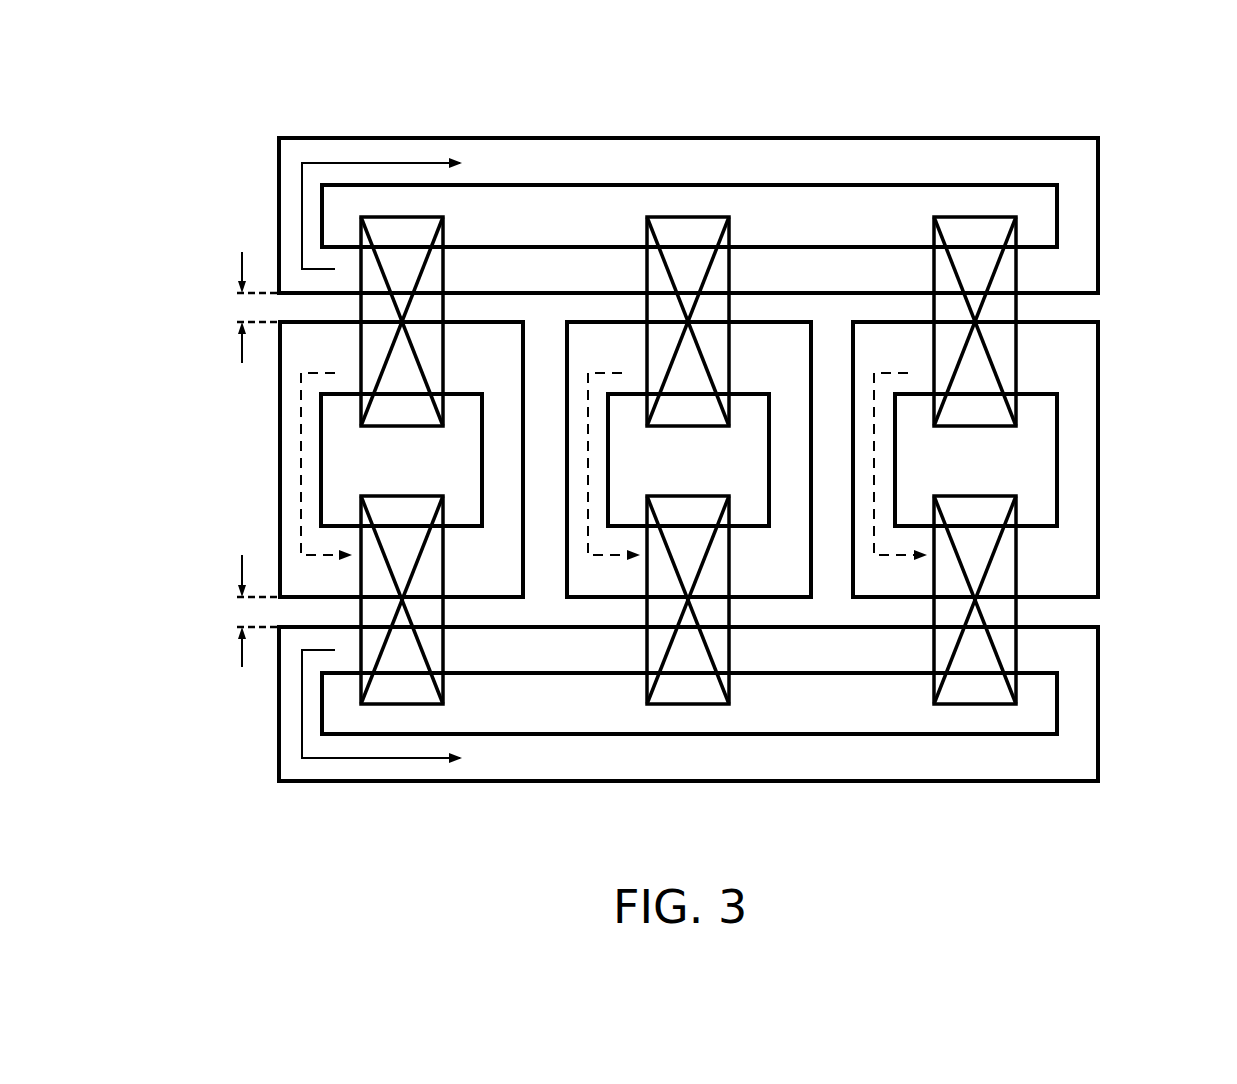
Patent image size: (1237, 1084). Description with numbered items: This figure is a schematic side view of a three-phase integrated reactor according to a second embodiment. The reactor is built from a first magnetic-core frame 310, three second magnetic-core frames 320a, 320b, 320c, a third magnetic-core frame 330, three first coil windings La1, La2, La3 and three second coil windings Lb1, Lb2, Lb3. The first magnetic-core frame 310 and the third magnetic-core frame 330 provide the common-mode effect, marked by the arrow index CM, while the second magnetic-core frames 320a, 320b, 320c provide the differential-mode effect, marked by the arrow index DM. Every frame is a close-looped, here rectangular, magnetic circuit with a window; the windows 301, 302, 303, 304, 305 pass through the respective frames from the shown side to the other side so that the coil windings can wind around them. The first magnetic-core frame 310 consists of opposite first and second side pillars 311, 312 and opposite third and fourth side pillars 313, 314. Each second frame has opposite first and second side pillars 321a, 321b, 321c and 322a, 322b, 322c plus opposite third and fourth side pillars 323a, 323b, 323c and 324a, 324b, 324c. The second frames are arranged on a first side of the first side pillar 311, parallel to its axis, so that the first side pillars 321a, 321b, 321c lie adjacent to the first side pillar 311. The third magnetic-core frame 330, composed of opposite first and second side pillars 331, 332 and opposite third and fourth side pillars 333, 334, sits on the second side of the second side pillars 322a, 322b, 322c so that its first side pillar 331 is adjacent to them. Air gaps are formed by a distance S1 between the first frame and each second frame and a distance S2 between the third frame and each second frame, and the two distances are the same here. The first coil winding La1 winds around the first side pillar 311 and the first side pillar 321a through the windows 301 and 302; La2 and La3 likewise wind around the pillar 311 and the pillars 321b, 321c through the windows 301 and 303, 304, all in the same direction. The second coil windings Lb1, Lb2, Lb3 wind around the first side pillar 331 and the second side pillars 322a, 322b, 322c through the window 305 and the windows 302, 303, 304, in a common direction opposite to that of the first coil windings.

The window 301 is at (975, 195).
The window 302 is at (375, 472).
The window 303 is at (662, 472).
The window 304 is at (949, 472).
The window 305 is at (975, 720).
The first magnetic-core frame 310 is at (703, 457).
The first side pillar 311 is at (600, 265).
The second side pillar 312 is at (687, 150).
The third side pillar 313 is at (286, 215).
The fourth side pillar 314 is at (1087, 213).
The second magnetic-core frame 320a is at (377, 537).
The second magnetic-core frame 320b is at (701, 537).
The second magnetic-core frame 320c is at (1030, 469).
The first side pillar 321a is at (463, 362).
The first side pillar 321b is at (750, 362).
The first side pillar 321c is at (1043, 350).
The second side pillar 322a is at (457, 567).
The second side pillar 322b is at (743, 567).
The second side pillar 322c is at (1030, 567).
The third side pillar 323a is at (285, 418).
The third side pillar 323b is at (573, 473).
The third side pillar 323c is at (862, 473).
The fourth side pillar 324a is at (503, 465).
The fourth side pillar 324b is at (792, 465).
The fourth side pillar 324c is at (1083, 470).
The third magnetic-core frame 330 is at (703, 733).
The first side pillar 331 is at (616, 657).
The second side pillar 332 is at (688, 767).
The third side pillar 333 is at (286, 703).
The fourth side pillar 334 is at (1087, 703).
The first coil winding La1 is at (443, 232).
The first coil winding La2 is at (729, 232).
The first coil winding La3 is at (934, 232).
The second coil winding Lb1 is at (443, 687).
The second coil winding Lb2 is at (729, 687).
The second coil winding Lb3 is at (934, 687).
The common-mode effect index CM is at (380, 160).
The differential-mode effect index DM is at (318, 372).
The distance S1 is at (240, 307).
The distance S2 is at (240, 611).